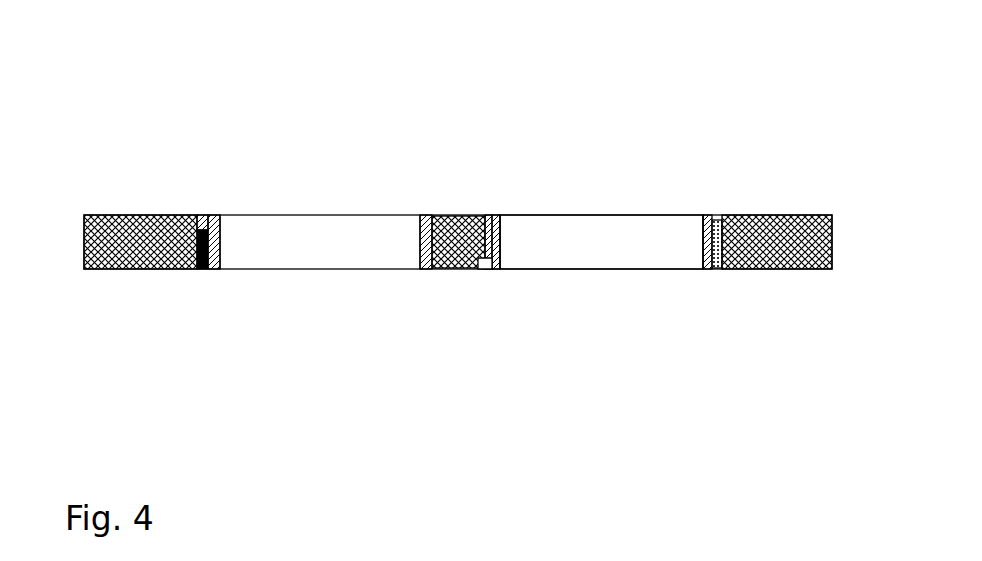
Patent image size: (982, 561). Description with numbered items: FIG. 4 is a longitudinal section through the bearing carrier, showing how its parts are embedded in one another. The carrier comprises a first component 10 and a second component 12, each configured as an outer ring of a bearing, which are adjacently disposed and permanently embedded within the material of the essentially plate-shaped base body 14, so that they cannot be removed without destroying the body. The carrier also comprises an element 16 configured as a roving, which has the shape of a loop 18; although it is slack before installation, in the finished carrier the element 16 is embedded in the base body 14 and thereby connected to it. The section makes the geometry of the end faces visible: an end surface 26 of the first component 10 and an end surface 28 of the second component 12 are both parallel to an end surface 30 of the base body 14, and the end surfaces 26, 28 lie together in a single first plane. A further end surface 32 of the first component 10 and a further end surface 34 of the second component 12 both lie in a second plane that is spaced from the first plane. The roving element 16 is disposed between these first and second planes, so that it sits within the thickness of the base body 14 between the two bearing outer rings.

The first component 10 is at (408, 224).
The second component 12 is at (512, 222).
The base body 14 is at (760, 232).
The element 16 is at (146, 191).
The loop 18 is at (200, 215).
The end surface 26 is at (431, 214).
The end surface 28 is at (716, 214).
The end surface 30 is at (461, 214).
The further end surface 32 is at (206, 272).
The further end surface 34 is at (489, 271).